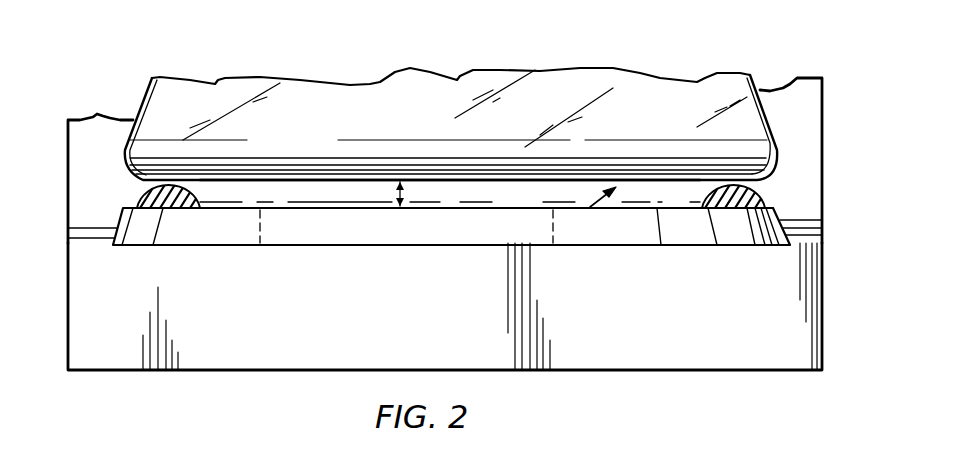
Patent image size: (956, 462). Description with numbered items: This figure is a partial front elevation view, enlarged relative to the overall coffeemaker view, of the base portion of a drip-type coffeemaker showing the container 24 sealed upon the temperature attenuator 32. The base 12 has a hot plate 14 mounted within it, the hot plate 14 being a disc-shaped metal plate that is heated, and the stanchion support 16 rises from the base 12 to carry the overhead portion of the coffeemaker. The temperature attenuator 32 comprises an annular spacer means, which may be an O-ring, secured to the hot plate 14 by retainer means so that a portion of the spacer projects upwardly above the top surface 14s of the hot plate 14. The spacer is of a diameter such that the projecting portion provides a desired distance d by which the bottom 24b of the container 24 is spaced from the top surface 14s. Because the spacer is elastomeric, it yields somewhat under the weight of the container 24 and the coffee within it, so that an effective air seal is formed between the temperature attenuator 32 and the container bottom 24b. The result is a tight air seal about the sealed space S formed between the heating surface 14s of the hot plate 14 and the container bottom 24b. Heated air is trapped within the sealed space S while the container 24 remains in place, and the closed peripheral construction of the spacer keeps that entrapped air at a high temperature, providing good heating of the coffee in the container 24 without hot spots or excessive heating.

The base 12 is at (703, 340).
The hot plate 14 is at (313, 223).
The top surface of hot plate 14s is at (668, 209).
The stanchion support 16 is at (795, 101).
The container 24 is at (613, 90).
The bottom of container 24b is at (648, 178).
The temperature attenuator 32 is at (590, 207).
The distance d is at (403, 193).
The sealed space S is at (450, 198).